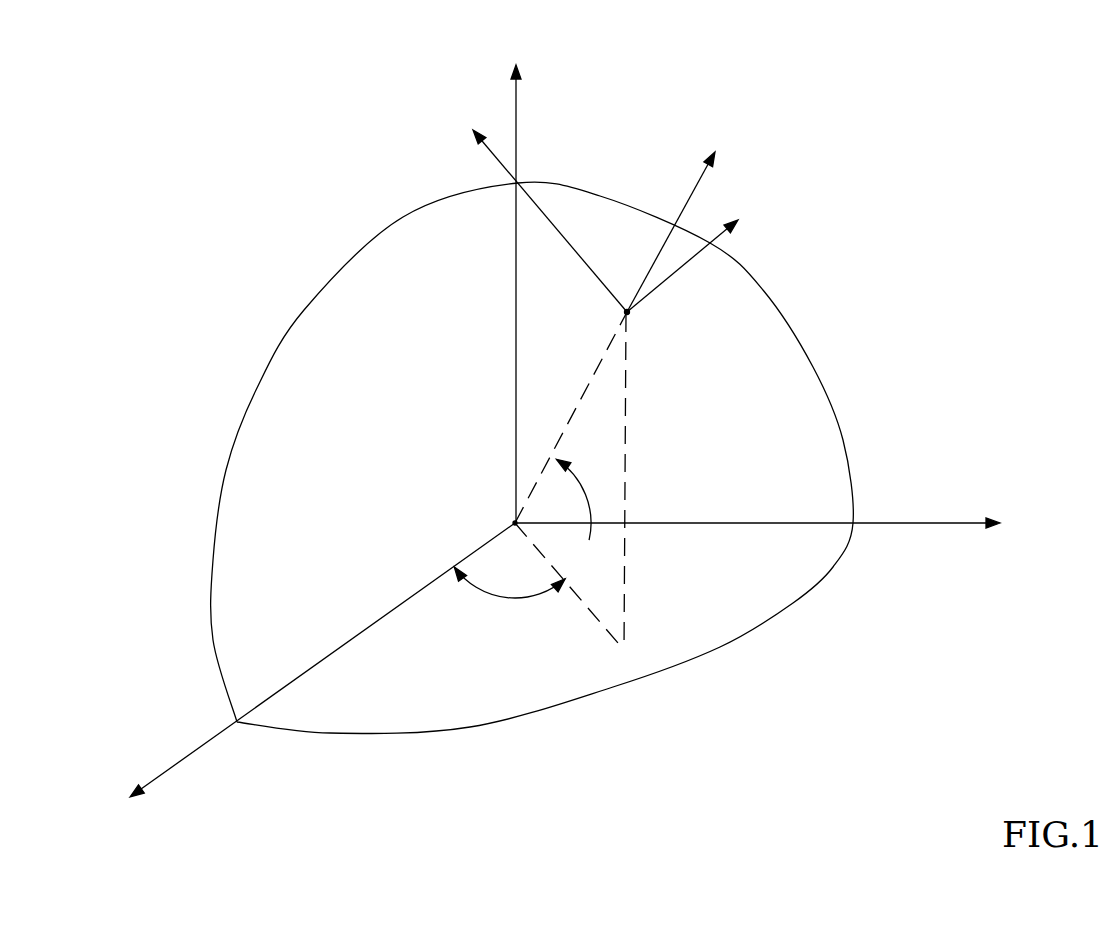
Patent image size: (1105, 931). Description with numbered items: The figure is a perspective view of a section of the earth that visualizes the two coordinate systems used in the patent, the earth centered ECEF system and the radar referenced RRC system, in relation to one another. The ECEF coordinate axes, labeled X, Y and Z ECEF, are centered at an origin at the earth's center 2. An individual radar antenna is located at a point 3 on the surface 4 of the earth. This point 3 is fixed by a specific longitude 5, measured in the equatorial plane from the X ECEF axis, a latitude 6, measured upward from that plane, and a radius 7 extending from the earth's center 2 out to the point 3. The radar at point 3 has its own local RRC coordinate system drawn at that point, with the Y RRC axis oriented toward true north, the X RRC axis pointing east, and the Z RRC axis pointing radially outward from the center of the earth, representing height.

The earth's center 2 is at (515, 523).
The point 3 is at (630, 316).
The surface of the earth 4 is at (822, 373).
The longitude 5 is at (478, 591).
The latitude 6 is at (592, 540).
The radius 7 is at (607, 352).